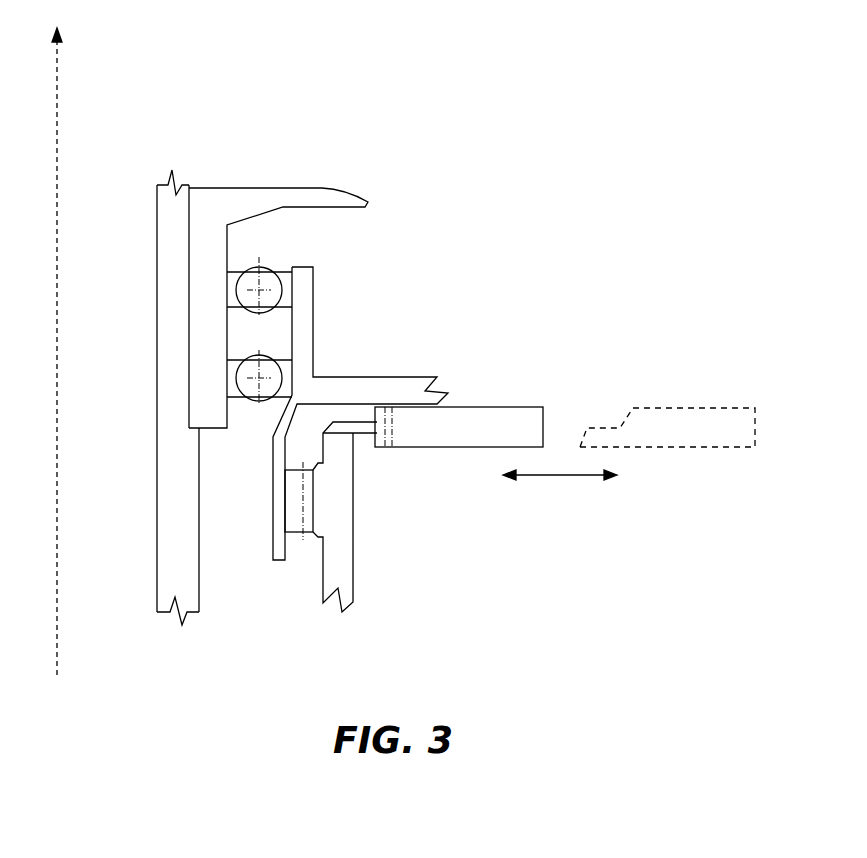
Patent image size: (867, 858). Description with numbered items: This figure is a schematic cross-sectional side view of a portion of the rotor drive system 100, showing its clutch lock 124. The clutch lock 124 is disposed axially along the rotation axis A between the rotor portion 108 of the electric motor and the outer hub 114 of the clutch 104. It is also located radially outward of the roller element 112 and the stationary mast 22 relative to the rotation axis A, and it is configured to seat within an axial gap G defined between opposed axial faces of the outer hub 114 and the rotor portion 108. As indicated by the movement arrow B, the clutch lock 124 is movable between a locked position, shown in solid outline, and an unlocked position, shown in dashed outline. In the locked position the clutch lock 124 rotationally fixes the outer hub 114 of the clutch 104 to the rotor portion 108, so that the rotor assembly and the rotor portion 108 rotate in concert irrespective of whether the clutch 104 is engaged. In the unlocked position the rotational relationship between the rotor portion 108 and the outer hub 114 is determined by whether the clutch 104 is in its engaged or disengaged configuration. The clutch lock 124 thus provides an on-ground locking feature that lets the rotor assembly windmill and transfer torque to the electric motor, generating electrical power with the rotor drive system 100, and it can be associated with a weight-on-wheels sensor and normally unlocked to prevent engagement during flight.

The stationary mast 22 is at (168, 213).
The rotor drive system 100 is at (132, 722).
The clutch 104 is at (540, 547).
The rotor portion 108 is at (328, 383).
The roller element 112 is at (297, 510).
The outer hub 114 is at (335, 510).
The clutch lock 124 is at (450, 432).
The rotation axis A is at (57, 122).
The movement arrow B is at (570, 483).
The axial gap G is at (317, 410).